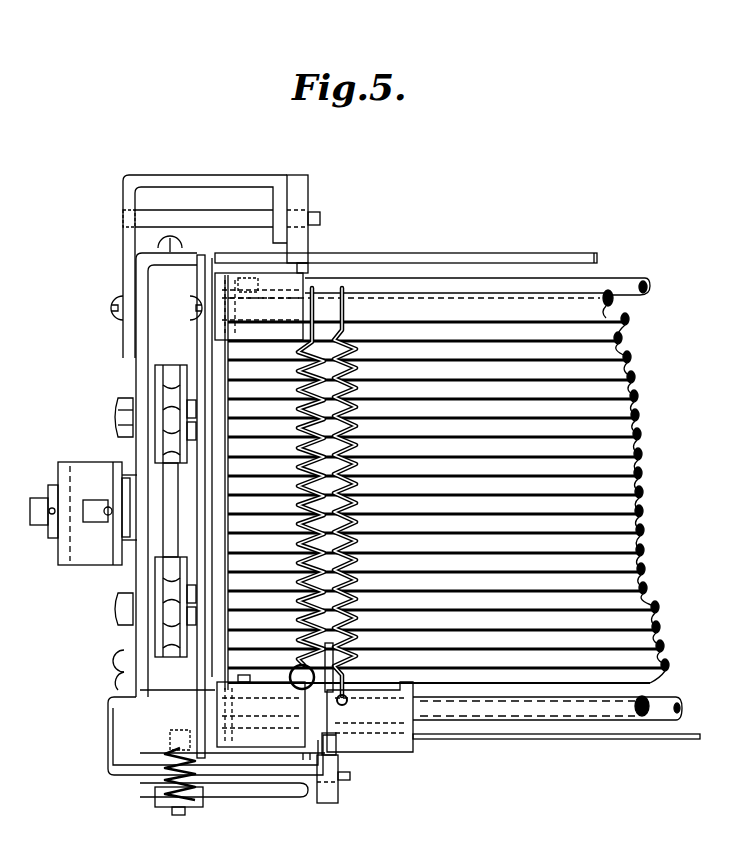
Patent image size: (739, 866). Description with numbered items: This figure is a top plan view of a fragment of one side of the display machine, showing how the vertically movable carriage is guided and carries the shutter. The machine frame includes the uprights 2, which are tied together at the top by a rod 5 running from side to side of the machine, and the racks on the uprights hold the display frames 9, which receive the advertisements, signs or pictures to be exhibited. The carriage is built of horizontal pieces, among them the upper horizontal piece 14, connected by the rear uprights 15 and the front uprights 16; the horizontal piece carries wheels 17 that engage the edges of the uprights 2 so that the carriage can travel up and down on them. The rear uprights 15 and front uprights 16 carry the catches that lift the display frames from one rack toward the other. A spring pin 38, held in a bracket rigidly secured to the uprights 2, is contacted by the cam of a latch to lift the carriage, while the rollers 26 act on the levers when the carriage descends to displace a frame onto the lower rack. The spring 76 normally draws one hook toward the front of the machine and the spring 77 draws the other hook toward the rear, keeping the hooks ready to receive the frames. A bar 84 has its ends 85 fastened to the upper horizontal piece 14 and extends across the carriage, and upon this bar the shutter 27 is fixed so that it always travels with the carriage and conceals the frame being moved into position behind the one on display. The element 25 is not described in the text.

The uprights 2 is at (165, 478).
The rod 5 is at (603, 313).
The display frames 9 is at (630, 587).
The horizontal piece 14 is at (140, 640).
The uprights 15 is at (158, 273).
The uprights 16 is at (157, 702).
The wheels 17 is at (165, 381).
The upper block 25 is at (308, 190).
The rollers 26 is at (330, 795).
The shutter 27 is at (676, 740).
The spring pin 38 is at (183, 806).
The spring 76 is at (355, 570).
The spring 77 is at (302, 570).
The bar 84 is at (655, 727).
The ends 85 is at (122, 703).